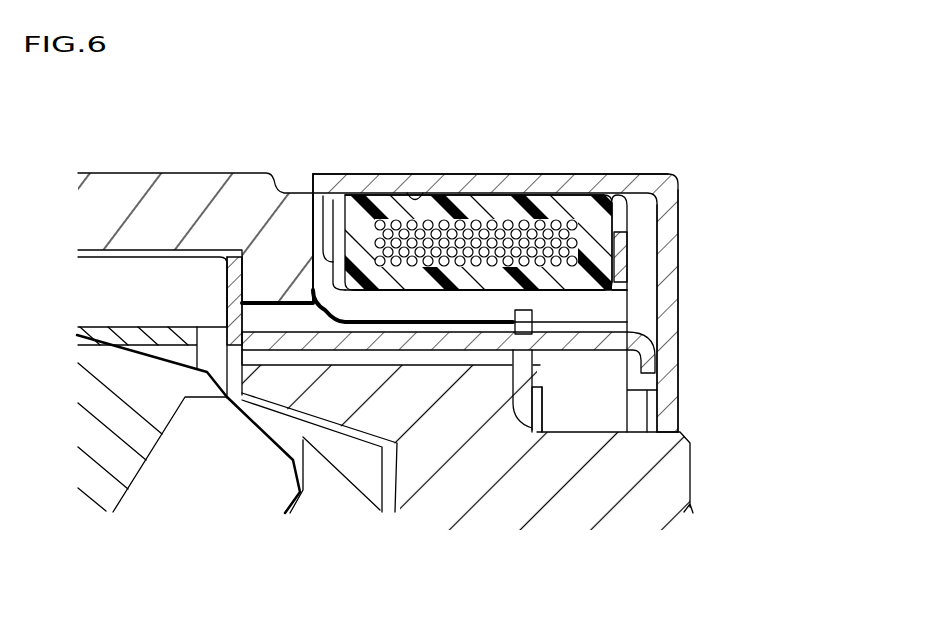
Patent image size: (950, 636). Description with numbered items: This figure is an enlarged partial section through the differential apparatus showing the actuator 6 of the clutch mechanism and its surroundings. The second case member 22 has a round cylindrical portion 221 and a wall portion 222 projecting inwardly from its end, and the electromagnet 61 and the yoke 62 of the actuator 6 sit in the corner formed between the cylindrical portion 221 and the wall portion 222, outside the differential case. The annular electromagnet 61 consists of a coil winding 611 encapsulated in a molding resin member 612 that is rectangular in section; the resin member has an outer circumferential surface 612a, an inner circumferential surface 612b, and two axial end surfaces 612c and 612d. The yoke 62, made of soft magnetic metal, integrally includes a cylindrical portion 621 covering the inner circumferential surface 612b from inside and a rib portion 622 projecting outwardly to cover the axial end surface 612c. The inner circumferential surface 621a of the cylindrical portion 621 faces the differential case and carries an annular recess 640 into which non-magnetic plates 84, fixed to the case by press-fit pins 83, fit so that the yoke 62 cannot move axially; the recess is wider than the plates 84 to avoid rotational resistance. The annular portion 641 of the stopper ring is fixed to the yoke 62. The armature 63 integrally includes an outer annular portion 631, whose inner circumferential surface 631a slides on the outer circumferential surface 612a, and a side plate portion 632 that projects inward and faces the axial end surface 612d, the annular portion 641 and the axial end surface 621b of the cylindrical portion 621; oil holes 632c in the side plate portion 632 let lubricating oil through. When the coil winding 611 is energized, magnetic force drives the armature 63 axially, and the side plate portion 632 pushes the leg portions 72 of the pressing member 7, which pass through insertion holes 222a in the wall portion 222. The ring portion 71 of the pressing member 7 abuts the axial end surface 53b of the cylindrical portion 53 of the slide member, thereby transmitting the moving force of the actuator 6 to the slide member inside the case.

The actuator 6 is at (720, 178).
The annular electromagnet 61 is at (685, 106).
The coil winding 611 is at (530, 197).
The molding resin member 612 is at (600, 210).
The outer circumferential surface 612a is at (468, 205).
The inner circumferential surface 612b is at (378, 300).
The axial end surface 612c is at (340, 215).
The axial end surface 612d is at (616, 234).
The yoke 62 is at (227, 398).
The cylindrical portion 621 is at (423, 325).
The inner circumferential surface 621a is at (460, 332).
The axial end surface 621b is at (630, 316).
The rib portion 622 is at (320, 235).
The armature 63 is at (675, 177).
The outer annular portion 631 is at (390, 183).
The inner circumferential surface 631a is at (418, 197).
The side plate portion 632 is at (668, 350).
The oil holes 632c is at (668, 233).
The annular recess 640 is at (533, 352).
The annular portion 641 is at (618, 272).
The pressing member 7 is at (290, 366).
The ring portion 71 is at (243, 268).
The leg portions 72 is at (585, 343).
The second case member 22 is at (690, 480).
The cylindrical portion 221 is at (210, 187).
The wall portion 222 is at (338, 420).
The insertion holes 222a is at (260, 380).
The cylindrical portion 53 is at (200, 277).
The axial end surface 53b is at (232, 258).
The press-fit pins 83 is at (536, 435).
The plates 84 is at (515, 405).